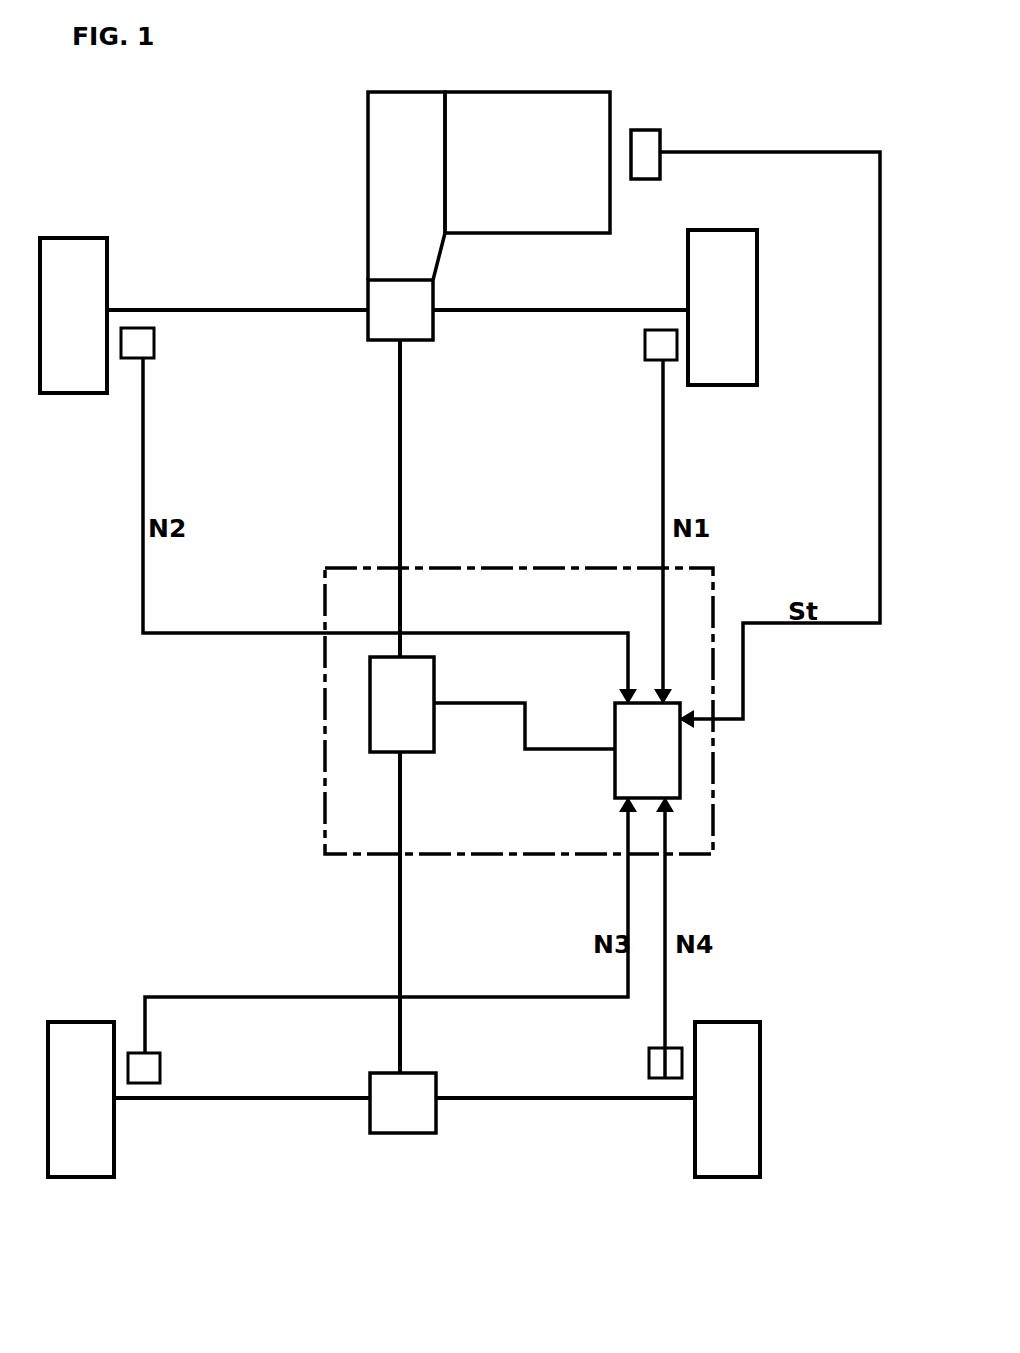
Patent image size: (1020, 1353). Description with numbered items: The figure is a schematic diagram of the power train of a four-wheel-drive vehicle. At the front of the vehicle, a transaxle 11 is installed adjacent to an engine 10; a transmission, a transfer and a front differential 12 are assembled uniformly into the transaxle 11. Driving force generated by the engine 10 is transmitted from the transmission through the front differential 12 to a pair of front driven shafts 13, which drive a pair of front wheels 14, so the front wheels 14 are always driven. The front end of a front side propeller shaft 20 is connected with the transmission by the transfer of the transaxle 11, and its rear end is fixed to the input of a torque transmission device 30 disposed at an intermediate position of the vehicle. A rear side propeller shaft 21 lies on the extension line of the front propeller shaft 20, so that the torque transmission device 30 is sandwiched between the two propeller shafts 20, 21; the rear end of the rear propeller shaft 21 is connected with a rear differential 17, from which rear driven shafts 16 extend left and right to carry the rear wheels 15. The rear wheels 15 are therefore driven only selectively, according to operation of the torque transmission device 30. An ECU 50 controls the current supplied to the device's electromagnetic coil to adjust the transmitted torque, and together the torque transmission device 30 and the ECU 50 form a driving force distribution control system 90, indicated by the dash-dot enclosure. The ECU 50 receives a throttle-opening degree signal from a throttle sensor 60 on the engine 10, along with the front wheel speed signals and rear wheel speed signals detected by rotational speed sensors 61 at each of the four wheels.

The engine 10 is at (542, 92).
The transaxle 11 is at (388, 157).
The front differential 12 is at (368, 297).
The front driven shafts 13 is at (260, 312).
The front wheels 14 is at (70, 394).
The rear wheels 15 is at (75, 1178).
The rear driven shafts 16 is at (247, 1099).
The rear differential 17 is at (397, 1134).
The front side propeller shaft 20 is at (398, 492).
The rear side propeller shaft 21 is at (398, 945).
The torque transmission device 30 is at (370, 713).
The ECU 50 is at (680, 758).
The throttle sensor 60 is at (660, 140).
The rotational speed sensors 61 is at (154, 344).
The driving force distribution control system 90 is at (325, 830).